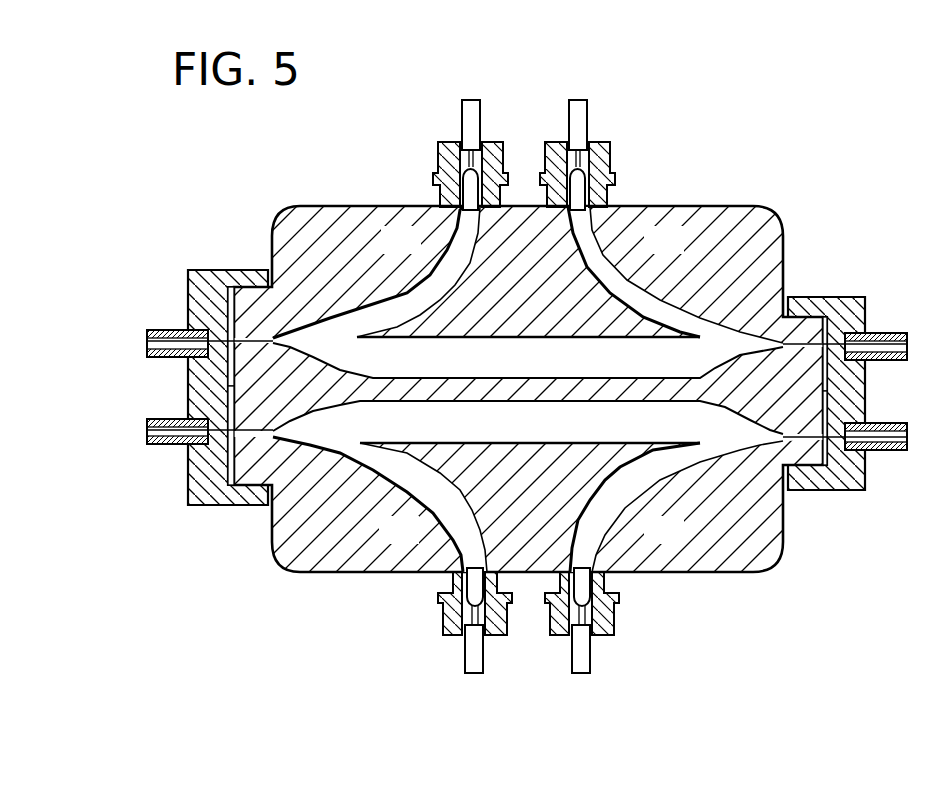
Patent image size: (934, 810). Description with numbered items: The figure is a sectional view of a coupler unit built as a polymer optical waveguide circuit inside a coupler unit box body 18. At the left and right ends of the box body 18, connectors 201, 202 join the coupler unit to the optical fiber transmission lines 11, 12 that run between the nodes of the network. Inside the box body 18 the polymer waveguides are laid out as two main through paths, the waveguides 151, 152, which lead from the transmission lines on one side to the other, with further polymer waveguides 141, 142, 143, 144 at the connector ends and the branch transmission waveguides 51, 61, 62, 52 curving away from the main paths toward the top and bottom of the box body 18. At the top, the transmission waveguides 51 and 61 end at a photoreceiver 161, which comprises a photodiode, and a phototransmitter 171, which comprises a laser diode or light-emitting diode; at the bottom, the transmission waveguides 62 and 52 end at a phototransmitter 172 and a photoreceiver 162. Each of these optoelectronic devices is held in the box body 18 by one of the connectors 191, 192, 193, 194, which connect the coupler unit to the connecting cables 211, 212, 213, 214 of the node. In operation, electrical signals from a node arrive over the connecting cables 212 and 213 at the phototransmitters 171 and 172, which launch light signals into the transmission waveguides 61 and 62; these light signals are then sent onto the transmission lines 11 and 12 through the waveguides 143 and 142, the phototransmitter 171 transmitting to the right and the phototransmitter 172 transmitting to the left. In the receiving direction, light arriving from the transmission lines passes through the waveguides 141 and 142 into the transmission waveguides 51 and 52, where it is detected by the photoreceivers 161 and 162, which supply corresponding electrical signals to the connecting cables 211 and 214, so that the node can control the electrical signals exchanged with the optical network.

The transmission line 11 is at (160, 330).
The transmission line 12 is at (165, 445).
The coupler unit box body 18 is at (745, 206).
The transmission waveguide 51 is at (455, 250).
The transmission waveguide 52 is at (598, 518).
The transmission waveguide 61 is at (605, 247).
The transmission waveguide 62 is at (455, 518).
The polymer waveguide 141 is at (253, 323).
The polymer waveguide 142 is at (256, 440).
The polymer waveguide 143 is at (808, 330).
The polymer waveguide 144 is at (804, 445).
The polymer waveguide 151 is at (528, 292).
The polymer waveguide 152 is at (528, 486).
The photoreceiver 161 is at (455, 163).
The photoreceiver 162 is at (598, 596).
The phototransmitter 171 is at (580, 178).
The phototransmitter 172 is at (470, 593).
The connector 191 is at (487, 143).
The connector 192 is at (597, 143).
The connector 193 is at (494, 635).
The connector 194 is at (555, 635).
The connector 201 is at (200, 270).
The connector 202 is at (843, 297).
The connecting cable 211 is at (469, 98).
The connecting cable 212 is at (576, 98).
The connecting cable 213 is at (473, 673).
The connecting cable 214 is at (585, 673).